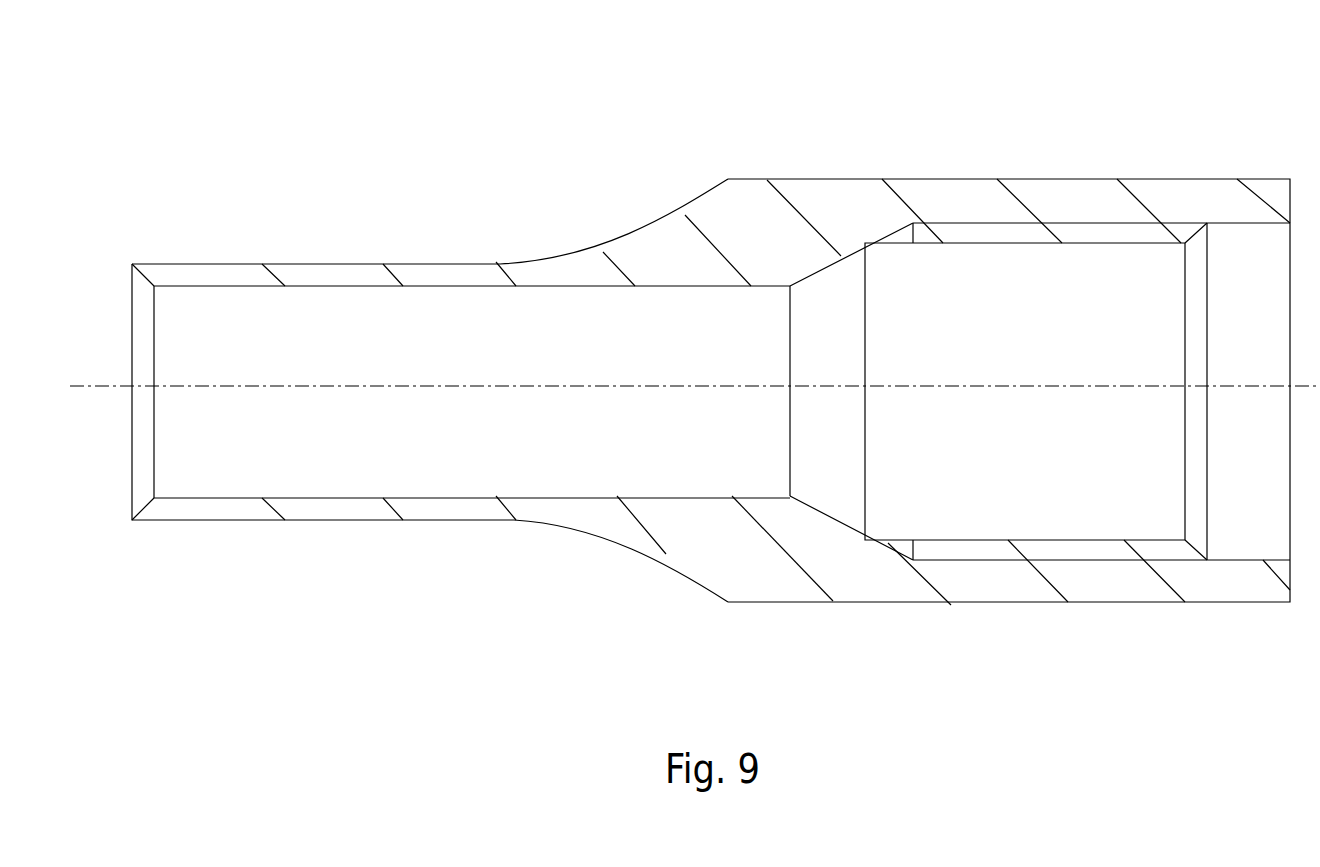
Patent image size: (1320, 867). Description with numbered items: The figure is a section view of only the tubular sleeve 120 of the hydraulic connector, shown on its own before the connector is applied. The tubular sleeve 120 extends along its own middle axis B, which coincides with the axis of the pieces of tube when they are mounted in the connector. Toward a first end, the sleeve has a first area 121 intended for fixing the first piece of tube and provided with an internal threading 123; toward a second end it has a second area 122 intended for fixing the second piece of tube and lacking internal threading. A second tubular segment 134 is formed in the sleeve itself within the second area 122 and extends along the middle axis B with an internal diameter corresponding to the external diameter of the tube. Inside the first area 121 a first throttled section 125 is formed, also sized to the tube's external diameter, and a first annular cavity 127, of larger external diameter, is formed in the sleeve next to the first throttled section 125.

The middle axis B is at (223, 389).
The tubular sleeve 120 is at (613, 182).
The first area 121 is at (967, 165).
The second area 122 is at (420, 250).
The internal threading 123 is at (1102, 233).
The first throttled section 125 is at (767, 498).
The first annular cavity 127 is at (842, 498).
The second tubular segment 134 is at (390, 497).